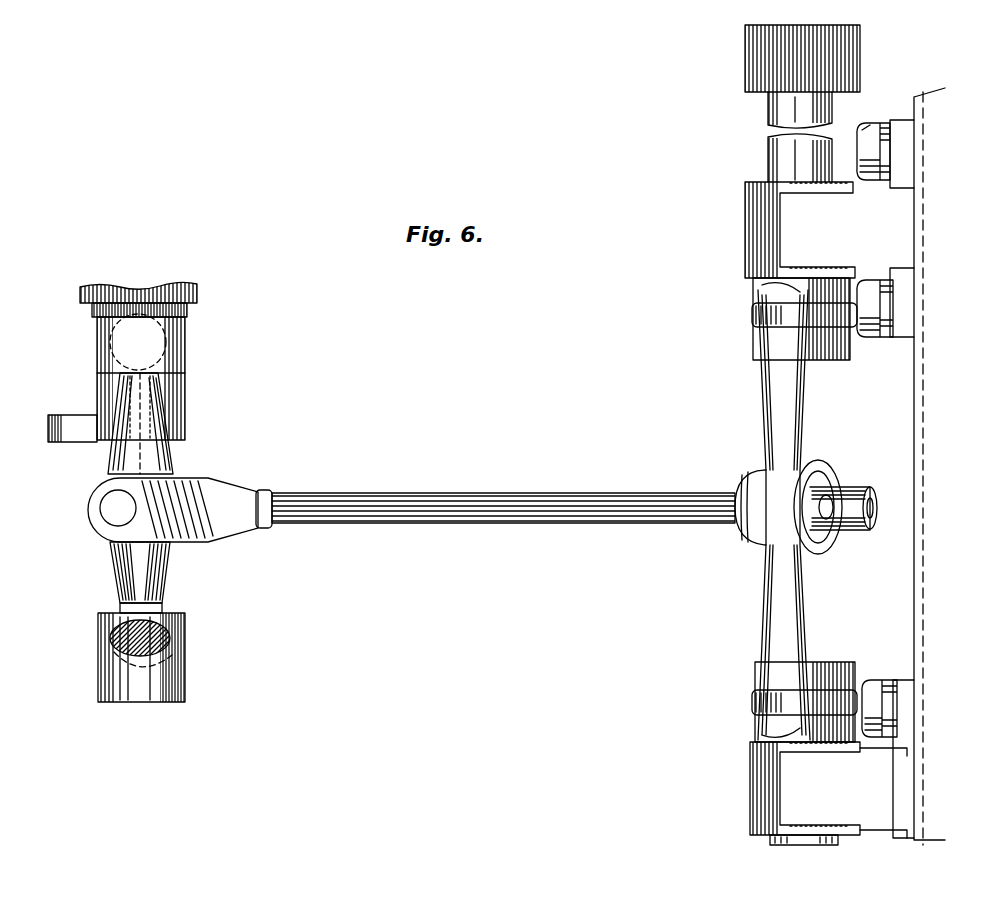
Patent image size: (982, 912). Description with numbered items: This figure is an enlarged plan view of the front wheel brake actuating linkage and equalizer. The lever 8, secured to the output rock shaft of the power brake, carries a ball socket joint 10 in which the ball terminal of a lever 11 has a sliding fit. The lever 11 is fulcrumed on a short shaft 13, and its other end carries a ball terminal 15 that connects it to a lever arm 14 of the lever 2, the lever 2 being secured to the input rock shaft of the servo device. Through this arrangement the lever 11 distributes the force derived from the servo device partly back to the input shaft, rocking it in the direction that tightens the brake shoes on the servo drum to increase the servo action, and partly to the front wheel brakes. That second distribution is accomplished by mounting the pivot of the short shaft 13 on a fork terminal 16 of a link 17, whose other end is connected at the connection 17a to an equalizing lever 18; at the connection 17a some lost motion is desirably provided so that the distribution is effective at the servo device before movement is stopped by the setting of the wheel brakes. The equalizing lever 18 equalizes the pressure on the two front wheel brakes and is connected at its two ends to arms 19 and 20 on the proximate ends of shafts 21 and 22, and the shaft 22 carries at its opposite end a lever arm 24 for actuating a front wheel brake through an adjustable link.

The lever 2 is at (64, 428).
The lever 8 is at (100, 659).
The ball socket joint 10 is at (155, 663).
The lever 11 is at (122, 567).
The short shaft 13 is at (110, 502).
The lever arm 14 is at (185, 350).
The ball terminal 15 is at (112, 348).
The fork terminal 16 is at (96, 519).
The link 17 is at (472, 508).
The connection 17a is at (832, 540).
The equalizing lever 18 is at (778, 577).
The arm 19 is at (757, 702).
The arm 20 is at (760, 318).
The shaft 21 is at (762, 842).
The shaft 22 is at (792, 155).
The lever arm 24 is at (768, 42).